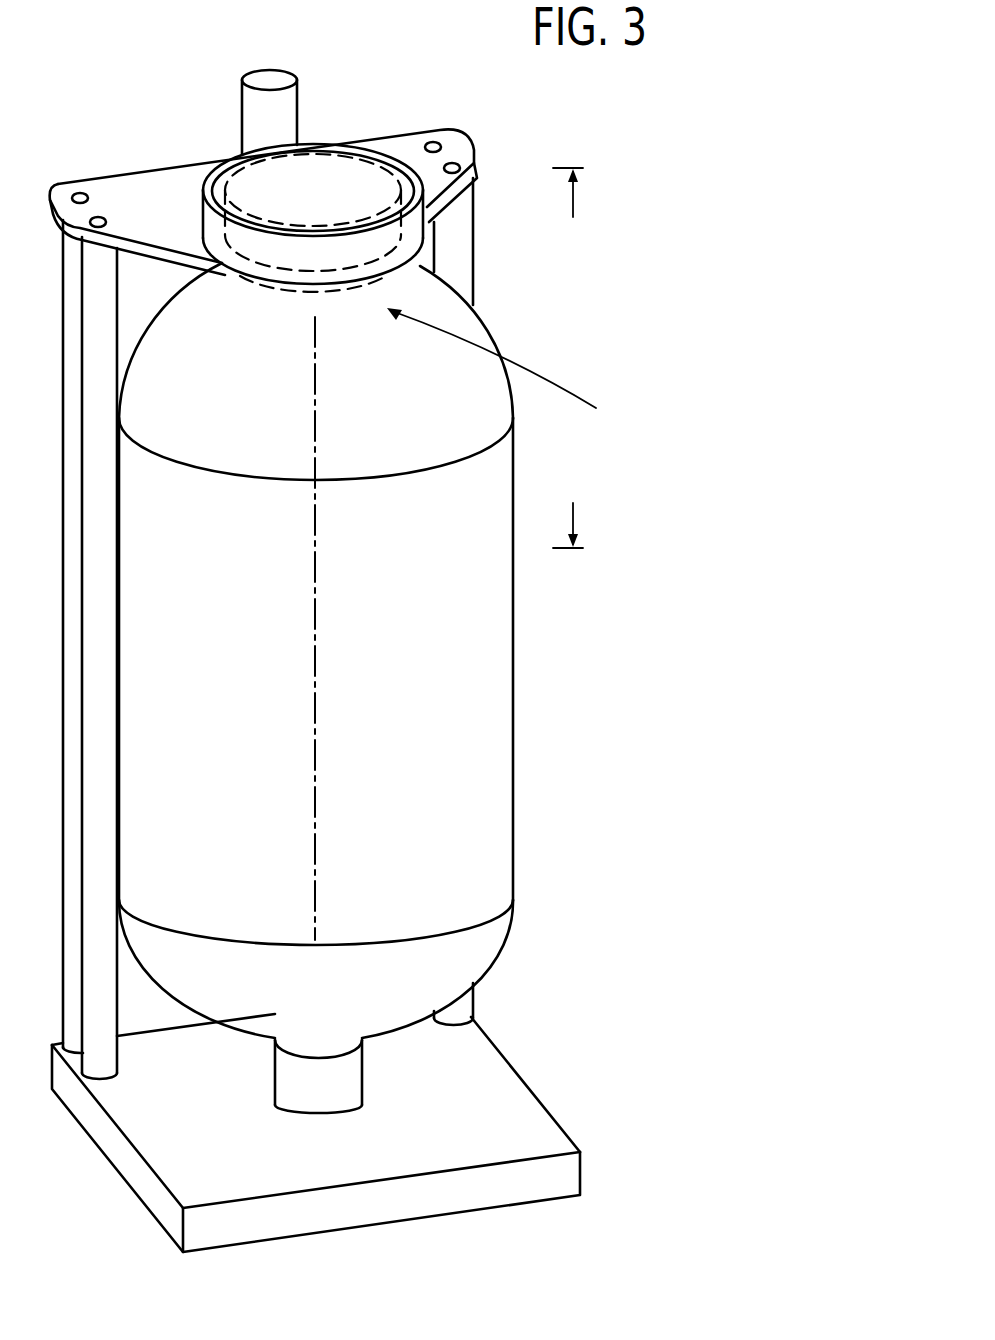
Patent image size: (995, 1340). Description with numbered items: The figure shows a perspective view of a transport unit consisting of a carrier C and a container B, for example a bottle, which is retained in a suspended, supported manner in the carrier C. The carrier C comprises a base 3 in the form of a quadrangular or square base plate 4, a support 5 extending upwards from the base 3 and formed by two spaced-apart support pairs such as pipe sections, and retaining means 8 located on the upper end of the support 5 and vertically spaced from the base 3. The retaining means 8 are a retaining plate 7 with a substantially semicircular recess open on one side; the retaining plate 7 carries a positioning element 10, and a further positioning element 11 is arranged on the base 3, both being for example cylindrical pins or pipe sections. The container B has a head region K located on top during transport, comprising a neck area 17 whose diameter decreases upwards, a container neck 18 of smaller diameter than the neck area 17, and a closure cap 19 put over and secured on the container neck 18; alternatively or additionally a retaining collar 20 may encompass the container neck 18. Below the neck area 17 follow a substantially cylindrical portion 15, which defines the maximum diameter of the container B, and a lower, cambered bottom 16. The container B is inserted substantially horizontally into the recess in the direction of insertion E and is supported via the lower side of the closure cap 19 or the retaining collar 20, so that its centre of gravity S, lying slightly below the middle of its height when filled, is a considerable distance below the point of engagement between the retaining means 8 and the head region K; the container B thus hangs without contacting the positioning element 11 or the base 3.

The base 3 is at (549, 1077).
The base plate 4 is at (530, 1117).
The support 5 is at (479, 1000).
The retaining plate 7 is at (180, 185).
The retaining means 8 is at (199, 221).
The positioning element 10 is at (300, 100).
The positioning element 11 is at (362, 1075).
The cylindrical portion 15 is at (515, 790).
The cambered bottom 16 is at (493, 930).
The neck area 17 is at (477, 325).
The container neck 18 is at (455, 133).
The closure cap 19 is at (434, 230).
The retaining collar 20 is at (290, 290).
The centre of gravity S is at (318, 620).
The direction of insertion E is at (537, 390).
The head region K is at (576, 512).
The container B is at (525, 741).
The carrier C is at (120, 1205).